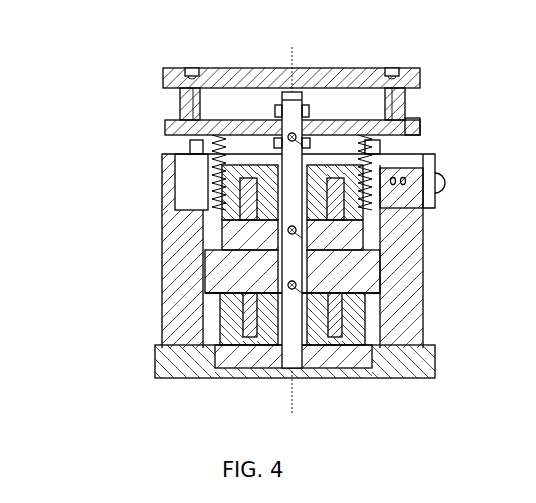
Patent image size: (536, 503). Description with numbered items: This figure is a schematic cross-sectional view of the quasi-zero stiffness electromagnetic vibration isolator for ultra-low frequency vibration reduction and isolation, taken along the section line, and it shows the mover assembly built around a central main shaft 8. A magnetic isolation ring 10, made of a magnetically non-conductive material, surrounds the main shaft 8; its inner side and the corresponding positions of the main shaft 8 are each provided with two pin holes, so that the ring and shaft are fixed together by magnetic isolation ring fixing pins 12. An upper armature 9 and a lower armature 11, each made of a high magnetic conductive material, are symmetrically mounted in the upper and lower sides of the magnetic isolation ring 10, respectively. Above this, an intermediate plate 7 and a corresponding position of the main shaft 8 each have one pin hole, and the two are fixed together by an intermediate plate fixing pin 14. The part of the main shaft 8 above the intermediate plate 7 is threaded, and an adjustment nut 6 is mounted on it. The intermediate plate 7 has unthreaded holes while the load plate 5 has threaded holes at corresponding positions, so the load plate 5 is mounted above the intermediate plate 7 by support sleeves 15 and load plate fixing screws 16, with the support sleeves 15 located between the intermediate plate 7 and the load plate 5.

The load plate 5 is at (232, 72).
The adjustment nut 6 is at (268, 108).
The intermediate plate 7 is at (167, 124).
The main shaft 8 is at (205, 188).
The upper armature 9 is at (262, 243).
The magnetic isolation ring 10 is at (222, 256).
The lower armature 11 is at (205, 296).
The magnetic isolation ring fixing pins 12 is at (300, 290).
The intermediate plate fixing pin 14 is at (422, 206).
The support sleeves 15 is at (417, 122).
The load plate fixing screws 16 is at (412, 92).